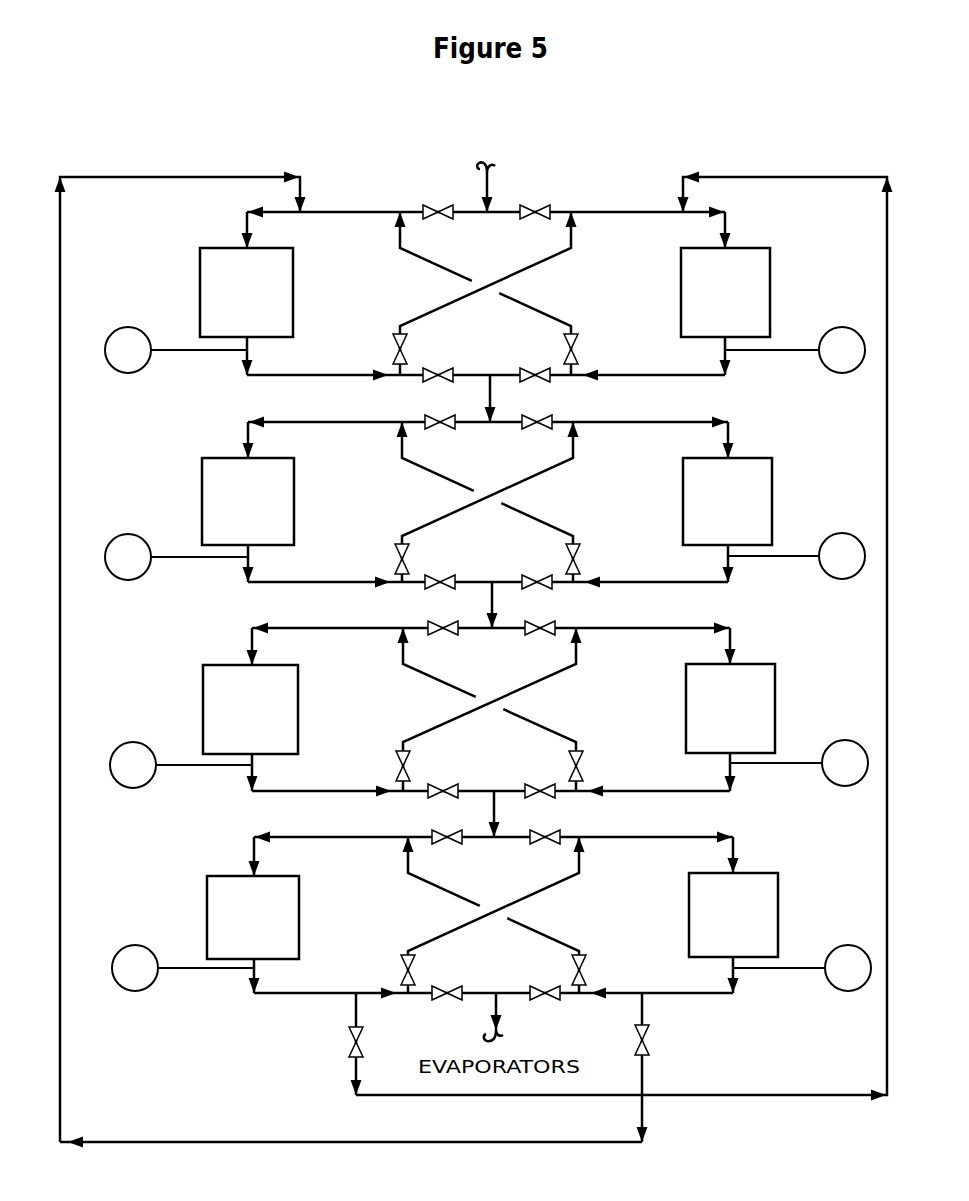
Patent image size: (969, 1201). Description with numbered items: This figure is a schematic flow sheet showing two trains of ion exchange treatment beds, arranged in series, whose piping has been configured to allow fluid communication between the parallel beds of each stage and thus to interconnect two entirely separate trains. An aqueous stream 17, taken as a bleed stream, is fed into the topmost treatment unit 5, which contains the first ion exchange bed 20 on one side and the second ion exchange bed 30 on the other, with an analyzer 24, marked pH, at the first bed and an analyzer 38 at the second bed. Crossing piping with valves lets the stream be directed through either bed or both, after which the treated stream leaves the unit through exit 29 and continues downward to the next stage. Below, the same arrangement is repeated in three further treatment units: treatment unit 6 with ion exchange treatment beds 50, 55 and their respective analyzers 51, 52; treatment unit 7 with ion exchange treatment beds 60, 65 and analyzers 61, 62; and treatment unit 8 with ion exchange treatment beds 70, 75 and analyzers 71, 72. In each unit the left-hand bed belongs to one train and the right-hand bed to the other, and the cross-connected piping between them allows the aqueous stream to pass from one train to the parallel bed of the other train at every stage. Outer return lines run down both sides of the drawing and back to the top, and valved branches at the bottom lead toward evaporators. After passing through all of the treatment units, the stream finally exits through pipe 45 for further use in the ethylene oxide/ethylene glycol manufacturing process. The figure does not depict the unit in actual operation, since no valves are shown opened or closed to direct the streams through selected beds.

The treatment unit 5 is at (620, 165).
The aqueous stream 17 is at (501, 187).
The first ion exchange bed 20 is at (246, 293).
The analyzer 24 is at (176, 354).
The exit 29 is at (504, 398).
The second ion exchange bed 30 is at (725, 293).
The analyzer 38 is at (795, 350).
The treatment unit 6 is at (746, 427).
The ion exchange treatment bed 50 is at (248, 502).
The analyzer 51 is at (176, 557).
The analyzer 52 is at (796, 556).
The ion exchange treatment bed 55 is at (727, 502).
The treatment unit 7 is at (747, 632).
The ion exchange treatment bed 60 is at (250, 709).
The analyzer 61 is at (181, 765).
The analyzer 62 is at (799, 763).
The ion exchange treatment bed 65 is at (730, 709).
The treatment unit 8 is at (749, 840).
The ion exchange treatment bed 70 is at (253, 915).
The analyzer 71 is at (183, 968).
The analyzer 72 is at (802, 968).
The ion exchange treatment bed 75 is at (733, 915).
The pipe 45 is at (507, 1017).